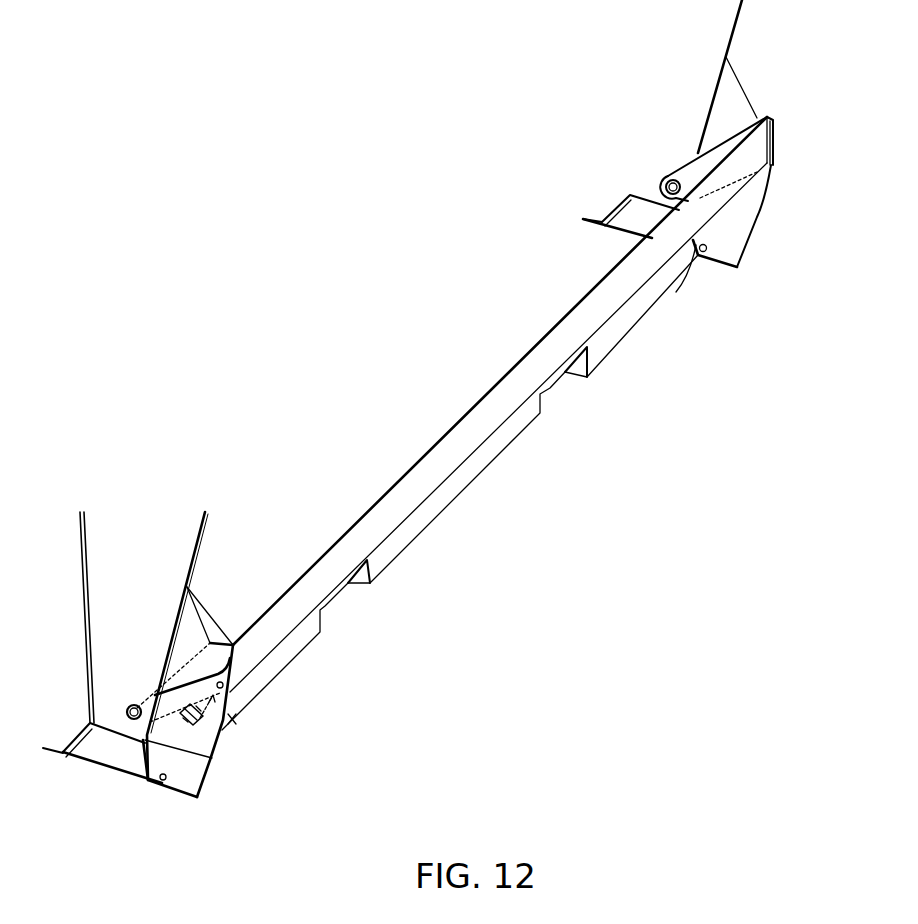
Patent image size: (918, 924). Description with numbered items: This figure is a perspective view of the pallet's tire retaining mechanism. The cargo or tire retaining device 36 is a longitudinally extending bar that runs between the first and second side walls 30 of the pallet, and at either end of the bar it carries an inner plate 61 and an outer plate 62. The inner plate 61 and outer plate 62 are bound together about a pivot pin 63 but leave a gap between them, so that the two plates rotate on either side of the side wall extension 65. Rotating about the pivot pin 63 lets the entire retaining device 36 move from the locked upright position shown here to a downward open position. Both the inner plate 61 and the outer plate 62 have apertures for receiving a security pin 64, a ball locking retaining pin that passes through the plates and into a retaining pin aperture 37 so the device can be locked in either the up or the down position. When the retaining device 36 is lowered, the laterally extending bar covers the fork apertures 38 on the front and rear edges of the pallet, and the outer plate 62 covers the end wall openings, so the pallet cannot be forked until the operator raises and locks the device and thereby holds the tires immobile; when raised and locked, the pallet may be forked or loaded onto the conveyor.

The side wall 30 is at (702, 56).
The tire retaining device 36 is at (367, 538).
The retaining pin aperture 37 is at (233, 721).
The fork aperture 38 is at (553, 384).
The inner plate 61 is at (694, 168).
The outer plate 62 is at (772, 184).
The pivot pin 63 is at (128, 704).
The security pin 64 is at (224, 724).
The side wall extension 65 is at (735, 100).